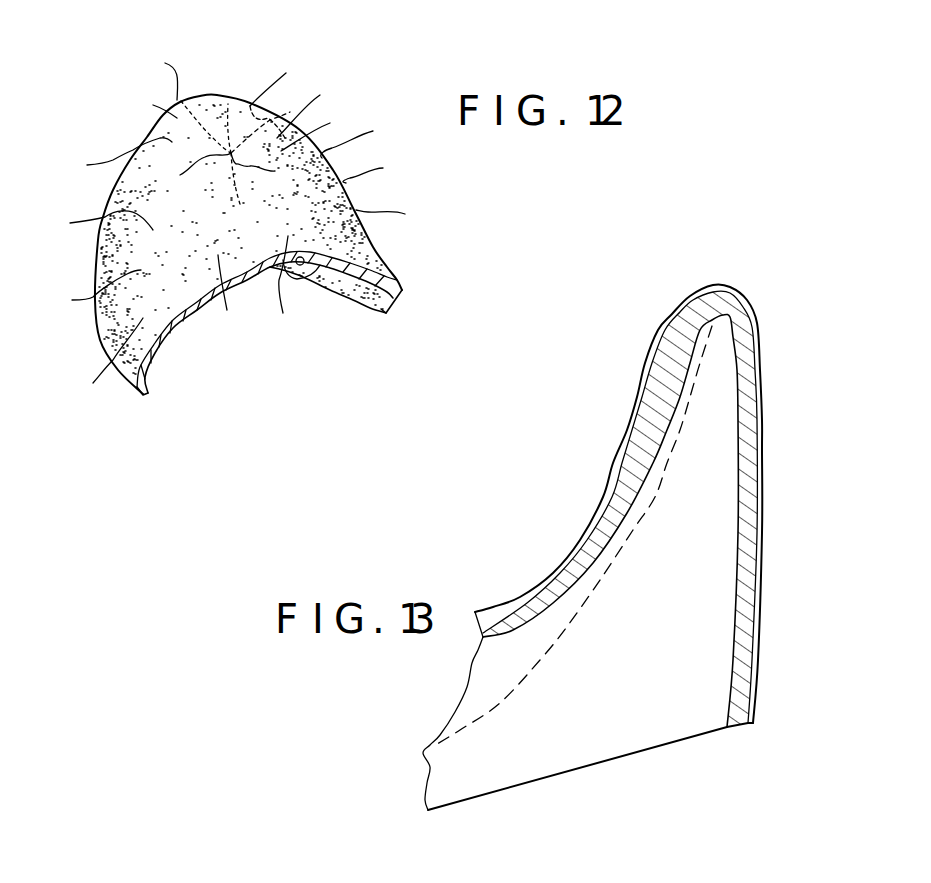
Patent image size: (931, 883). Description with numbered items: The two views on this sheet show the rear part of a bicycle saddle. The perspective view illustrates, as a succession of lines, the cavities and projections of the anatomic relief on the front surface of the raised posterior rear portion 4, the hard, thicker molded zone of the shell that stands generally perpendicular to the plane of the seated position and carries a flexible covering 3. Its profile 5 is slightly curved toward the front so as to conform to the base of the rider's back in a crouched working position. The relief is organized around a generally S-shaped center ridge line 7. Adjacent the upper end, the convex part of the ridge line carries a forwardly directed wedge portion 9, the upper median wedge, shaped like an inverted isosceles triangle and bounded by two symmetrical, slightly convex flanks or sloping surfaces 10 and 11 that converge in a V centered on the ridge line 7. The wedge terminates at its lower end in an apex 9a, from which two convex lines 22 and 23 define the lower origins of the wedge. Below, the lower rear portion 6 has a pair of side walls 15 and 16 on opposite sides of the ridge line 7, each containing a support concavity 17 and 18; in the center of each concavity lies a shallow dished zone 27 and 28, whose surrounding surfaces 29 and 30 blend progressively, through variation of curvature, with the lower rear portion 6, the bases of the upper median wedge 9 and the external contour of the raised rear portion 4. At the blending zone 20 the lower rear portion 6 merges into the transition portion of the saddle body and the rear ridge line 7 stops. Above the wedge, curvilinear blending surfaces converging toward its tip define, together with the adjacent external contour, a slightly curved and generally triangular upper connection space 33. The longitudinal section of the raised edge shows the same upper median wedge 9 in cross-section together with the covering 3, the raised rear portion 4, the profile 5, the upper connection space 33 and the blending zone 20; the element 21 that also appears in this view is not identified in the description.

In FIG. 13, the flexible covering 3 is at (760, 424).
In FIG. 13, the raised posterior rear portion 4 is at (776, 342).
In FIG. 13, the profile 5 is at (766, 563).
In FIG. 12, the lower rear portion 6 is at (313, 128).
In FIG. 12, the center ridge line 7 is at (260, 169).
In FIG. 12, the wedge portion 9 is at (225, 89).
In FIG. 13, the wedge portion 9 is at (632, 357).
In FIG. 12, the apex 9a is at (189, 170).
In FIG. 12, the flank 10 is at (280, 93).
In FIG. 12, the flank 11 is at (152, 103).
In FIG. 12, the side wall 15 is at (299, 287).
In FIG. 12, the side wall 16 is at (227, 297).
In FIG. 12, the concavity 17 is at (375, 166).
In FIG. 12, the concavity 18 is at (93, 293).
In FIG. 13, the blending zone 20 is at (493, 604).
In FIG. 13, the inner lining 21 is at (610, 480).
In FIG. 12, the convex line 22 is at (288, 113).
In FIG. 12, the convex line 23 is at (116, 158).
In FIG. 12, the dished zone 27 is at (361, 132).
In FIG. 12, the dished zone 28 is at (97, 224).
In FIG. 12, the surrounding surface 29 is at (394, 211).
In FIG. 12, the surrounding surface 30 is at (97, 360).
In FIG. 12, the upper connection space 33 is at (157, 70).
In FIG. 13, the upper connection space 33 is at (720, 283).